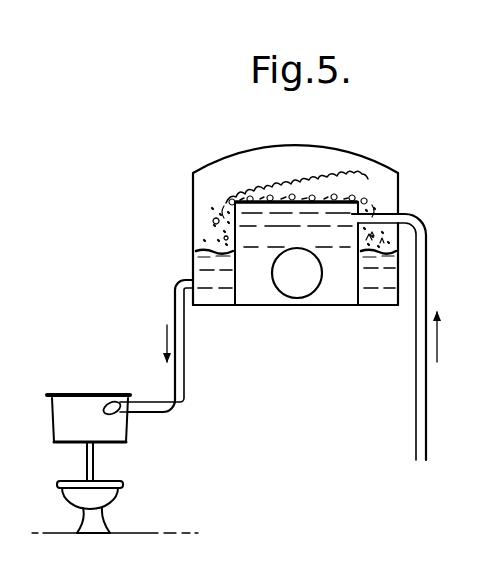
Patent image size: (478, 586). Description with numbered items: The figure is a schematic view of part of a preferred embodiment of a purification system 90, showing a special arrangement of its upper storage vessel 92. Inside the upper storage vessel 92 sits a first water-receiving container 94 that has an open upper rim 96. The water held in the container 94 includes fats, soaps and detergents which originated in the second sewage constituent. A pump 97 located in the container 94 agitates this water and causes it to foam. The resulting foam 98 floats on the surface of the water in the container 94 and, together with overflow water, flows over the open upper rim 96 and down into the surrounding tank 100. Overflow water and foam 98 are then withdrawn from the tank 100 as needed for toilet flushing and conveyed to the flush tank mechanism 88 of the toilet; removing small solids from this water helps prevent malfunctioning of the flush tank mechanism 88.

The flush tank mechanism 88 is at (115, 403).
The purification system 90 is at (143, 168).
The upper storage vessel 92 is at (396, 143).
The first water-receiving container 94 is at (236, 240).
The open upper rim 96 is at (238, 207).
The pump 97 is at (309, 299).
The foam 98 is at (331, 193).
The tank 100 is at (384, 305).